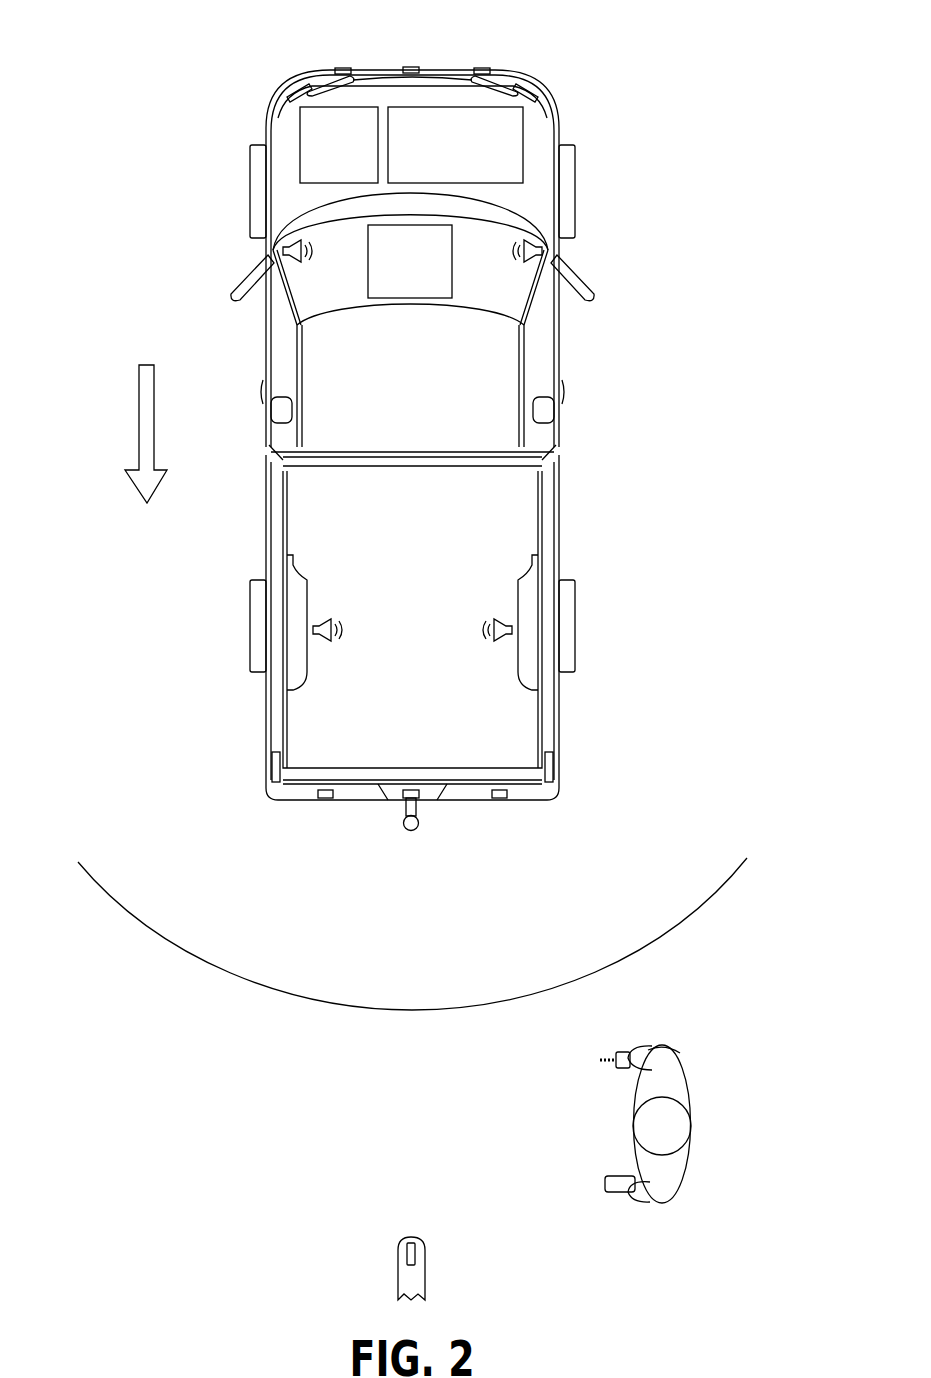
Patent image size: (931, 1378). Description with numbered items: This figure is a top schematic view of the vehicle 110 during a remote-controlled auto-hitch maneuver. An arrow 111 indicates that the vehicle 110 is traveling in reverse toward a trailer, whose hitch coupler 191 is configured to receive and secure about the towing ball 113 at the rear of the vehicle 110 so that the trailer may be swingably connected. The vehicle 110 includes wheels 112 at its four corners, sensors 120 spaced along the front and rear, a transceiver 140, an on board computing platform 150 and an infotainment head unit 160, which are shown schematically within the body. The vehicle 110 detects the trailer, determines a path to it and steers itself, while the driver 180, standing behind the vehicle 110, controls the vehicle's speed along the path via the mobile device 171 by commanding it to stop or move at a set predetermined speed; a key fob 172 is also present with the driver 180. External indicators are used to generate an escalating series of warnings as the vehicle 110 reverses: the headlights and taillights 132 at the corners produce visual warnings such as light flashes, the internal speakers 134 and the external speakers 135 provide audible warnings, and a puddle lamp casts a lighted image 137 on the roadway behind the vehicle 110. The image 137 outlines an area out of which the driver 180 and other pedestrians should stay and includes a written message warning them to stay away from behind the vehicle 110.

The vehicle 110 is at (634, 91).
The arrow 111 is at (139, 408).
The wheels 112 is at (250, 189).
The towing ball 113 is at (419, 823).
The sensors 120 is at (341, 68).
The headlights and taillights 132 is at (292, 95).
The internal speakers 134 is at (274, 251).
The external speakers 135 is at (314, 632).
The lighted image 137 is at (166, 890).
The transceiver 140 is at (437, 174).
The on board computing platform (OBCP) 150 is at (321, 174).
The infotainment head unit (IHU) 160 is at (392, 292).
The mobile device 171 is at (620, 1196).
The key fob 172 is at (617, 1053).
The driver 180 is at (692, 1126).
The hitch coupler 191 is at (396, 1258).